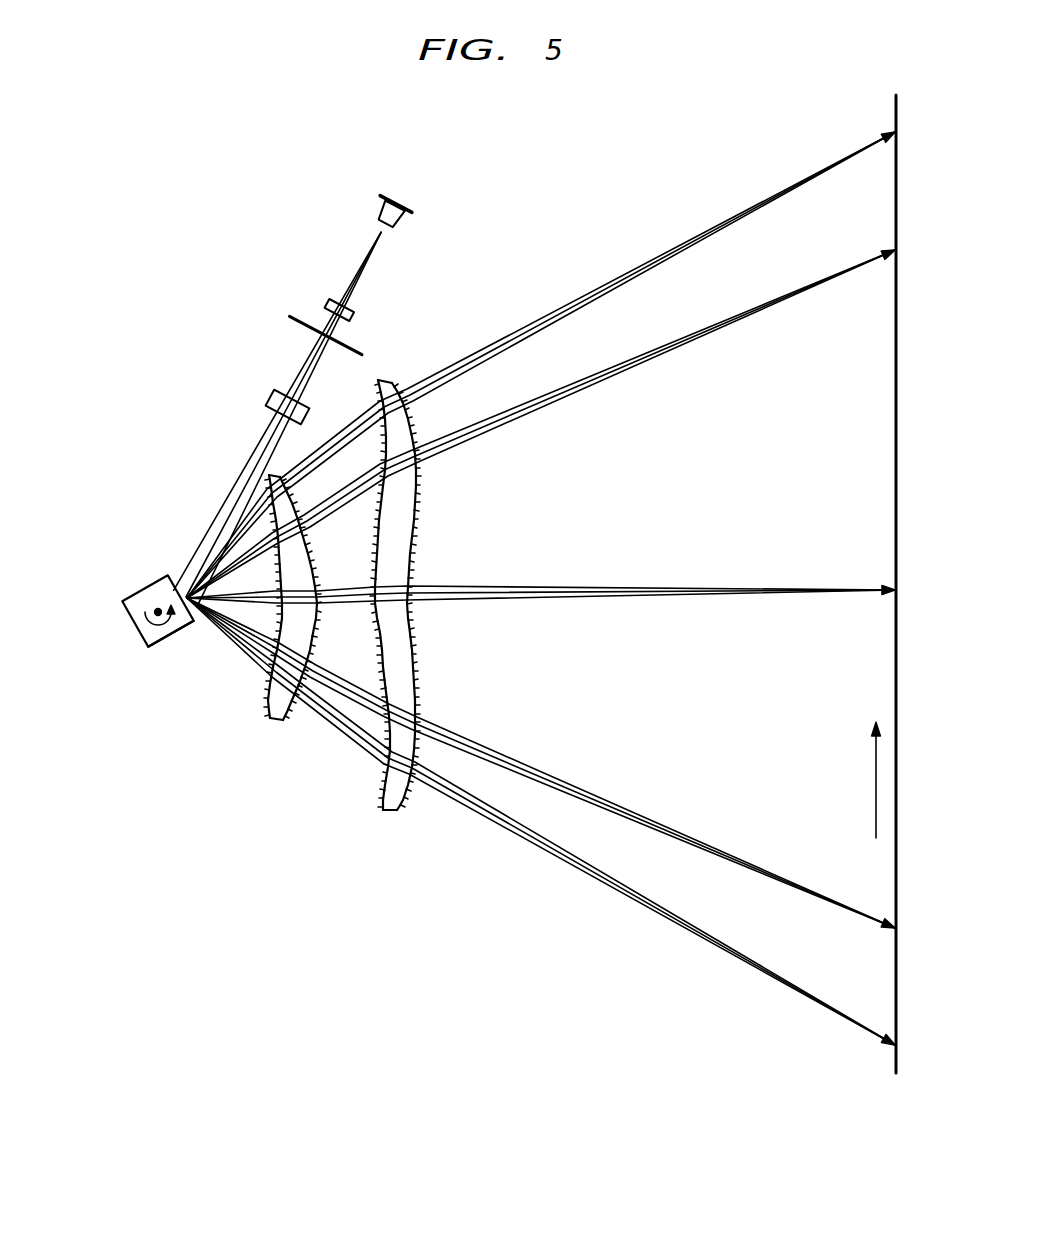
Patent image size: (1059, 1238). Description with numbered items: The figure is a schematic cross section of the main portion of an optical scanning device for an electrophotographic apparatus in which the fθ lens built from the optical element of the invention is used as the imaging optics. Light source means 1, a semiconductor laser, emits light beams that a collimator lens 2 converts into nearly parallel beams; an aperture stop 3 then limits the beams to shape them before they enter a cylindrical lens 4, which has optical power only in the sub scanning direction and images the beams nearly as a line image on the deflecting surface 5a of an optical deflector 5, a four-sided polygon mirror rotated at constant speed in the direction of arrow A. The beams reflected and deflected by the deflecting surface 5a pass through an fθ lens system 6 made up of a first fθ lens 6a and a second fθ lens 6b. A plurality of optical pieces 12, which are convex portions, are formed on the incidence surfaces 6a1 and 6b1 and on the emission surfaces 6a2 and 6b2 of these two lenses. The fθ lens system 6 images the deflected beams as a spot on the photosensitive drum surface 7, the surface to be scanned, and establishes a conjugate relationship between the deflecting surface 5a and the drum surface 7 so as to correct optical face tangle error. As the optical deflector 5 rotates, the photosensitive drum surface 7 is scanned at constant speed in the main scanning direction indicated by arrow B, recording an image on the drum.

The light source means 1 is at (402, 207).
The collimator lens 2 is at (328, 306).
The aperture stop 3 is at (296, 320).
The cylindrical lens 4 is at (272, 405).
The optical deflector 5 is at (132, 638).
The deflecting surface 5a is at (182, 625).
The fθ lens system 6 is at (347, 633).
The first fθ lens 6a is at (333, 637).
The incidence surface of first fθ lens 6a1 is at (268, 648).
The emission surface of first fθ lens 6a2 is at (312, 646).
The second fθ lens 6b is at (407, 633).
The incidence surface of second fθ lens 6b1 is at (399, 810).
The emission surface of second fθ lens 6b2 is at (417, 752).
The photosensitive drum surface 7 is at (900, 996).
The optical pieces 12 is at (278, 574).
The rotation direction of optical deflector A is at (135, 620).
The main scanning direction B is at (876, 793).